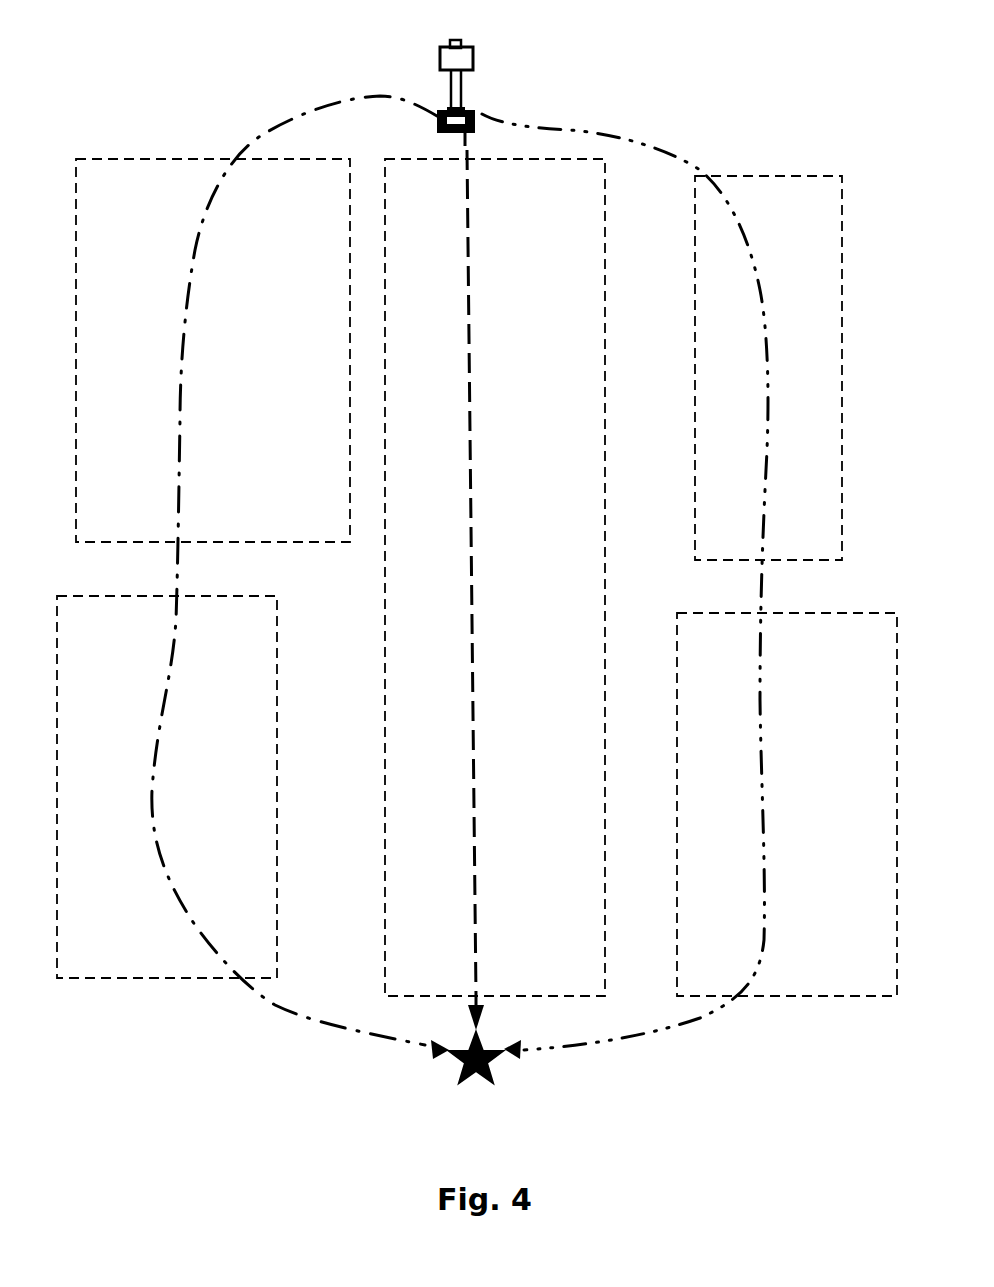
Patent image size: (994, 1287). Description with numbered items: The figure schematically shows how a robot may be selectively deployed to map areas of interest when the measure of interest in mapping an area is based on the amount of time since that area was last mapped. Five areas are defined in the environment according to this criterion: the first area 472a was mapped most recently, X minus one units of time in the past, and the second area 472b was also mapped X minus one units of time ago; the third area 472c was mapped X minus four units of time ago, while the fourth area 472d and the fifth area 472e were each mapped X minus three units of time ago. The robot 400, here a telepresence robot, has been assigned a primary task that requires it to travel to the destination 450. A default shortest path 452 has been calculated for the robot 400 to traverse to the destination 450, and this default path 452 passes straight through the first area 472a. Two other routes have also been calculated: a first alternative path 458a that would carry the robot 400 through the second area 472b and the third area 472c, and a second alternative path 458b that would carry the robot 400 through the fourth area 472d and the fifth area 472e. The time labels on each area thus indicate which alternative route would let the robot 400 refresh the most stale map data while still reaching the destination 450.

The robot 400 is at (527, 64).
The destination 450 is at (490, 1076).
The default shortest path 452 is at (471, 509).
The first alternative path 458a is at (150, 788).
The second alternative path 458b is at (762, 811).
The first area 472a is at (544, 194).
The second area 472b is at (288, 194).
The third area 472c is at (217, 630).
The fourth area 472d is at (780, 212).
The fifth area 472e is at (836, 649).